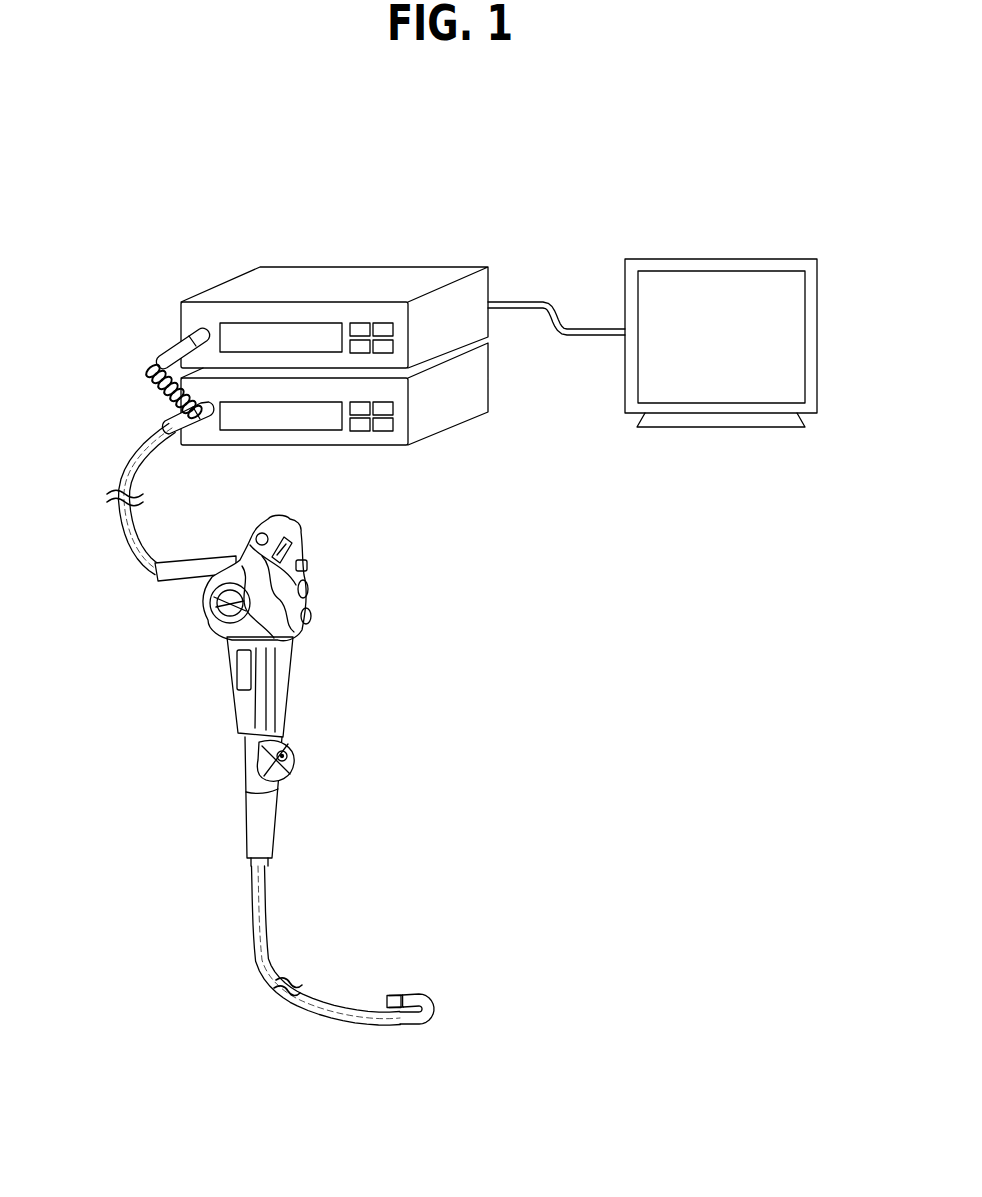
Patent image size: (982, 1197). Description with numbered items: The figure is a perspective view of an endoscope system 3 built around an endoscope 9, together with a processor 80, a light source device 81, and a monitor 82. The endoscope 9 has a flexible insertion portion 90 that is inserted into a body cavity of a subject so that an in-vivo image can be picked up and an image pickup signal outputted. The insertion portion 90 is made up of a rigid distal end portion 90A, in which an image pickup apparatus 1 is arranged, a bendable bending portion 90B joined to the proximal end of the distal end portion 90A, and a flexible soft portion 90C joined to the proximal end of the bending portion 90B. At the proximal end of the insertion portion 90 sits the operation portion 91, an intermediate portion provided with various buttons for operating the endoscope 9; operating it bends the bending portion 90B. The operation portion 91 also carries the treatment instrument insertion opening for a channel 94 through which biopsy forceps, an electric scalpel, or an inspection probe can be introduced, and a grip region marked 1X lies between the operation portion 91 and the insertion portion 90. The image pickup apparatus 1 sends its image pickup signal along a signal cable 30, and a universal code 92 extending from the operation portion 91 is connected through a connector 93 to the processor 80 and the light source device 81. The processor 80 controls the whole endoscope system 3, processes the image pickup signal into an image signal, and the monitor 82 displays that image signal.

The endoscope system 3 is at (650, 134).
The processor 80 is at (460, 266).
The light source device 81 is at (490, 378).
The monitor 82 is at (727, 258).
The connector 93 is at (188, 325).
The signal cable 30 is at (124, 462).
The universal code 92 is at (120, 527).
The operation portion 91 is at (312, 601).
The endoscope 9 is at (400, 644).
The grip portion 1X is at (230, 667).
The channel 94 is at (295, 752).
The insertion portion 90 is at (266, 904).
The image pickup apparatus 1 is at (392, 997).
The distal end portion 90A is at (397, 1015).
The bending portion 90B is at (433, 1013).
The soft portion 90C is at (302, 1010).